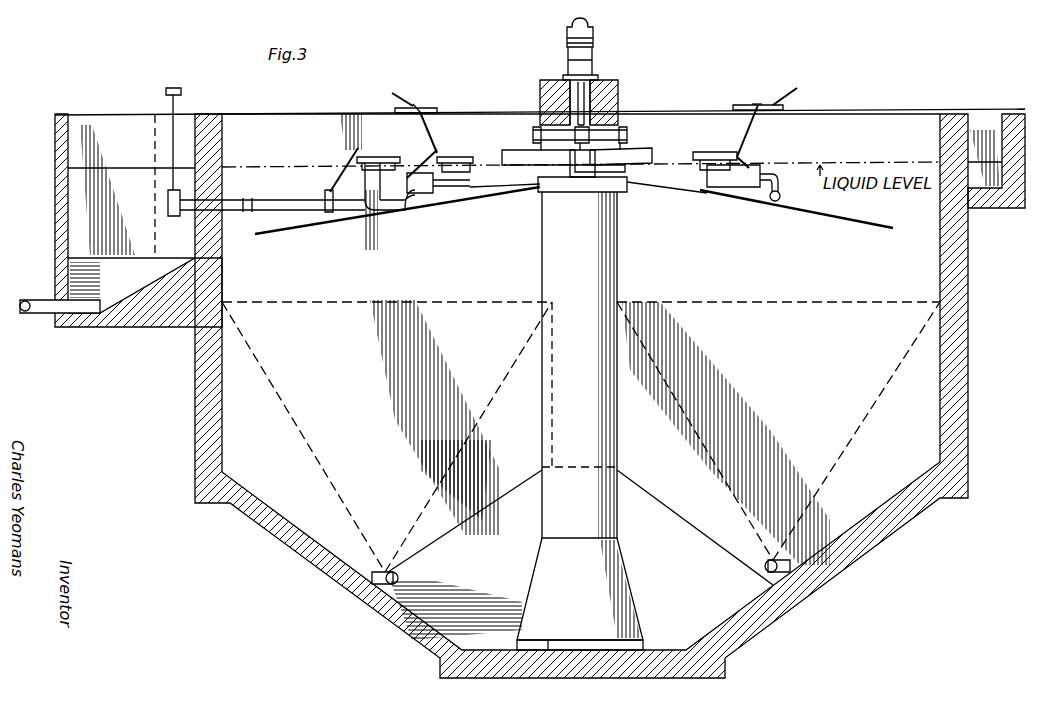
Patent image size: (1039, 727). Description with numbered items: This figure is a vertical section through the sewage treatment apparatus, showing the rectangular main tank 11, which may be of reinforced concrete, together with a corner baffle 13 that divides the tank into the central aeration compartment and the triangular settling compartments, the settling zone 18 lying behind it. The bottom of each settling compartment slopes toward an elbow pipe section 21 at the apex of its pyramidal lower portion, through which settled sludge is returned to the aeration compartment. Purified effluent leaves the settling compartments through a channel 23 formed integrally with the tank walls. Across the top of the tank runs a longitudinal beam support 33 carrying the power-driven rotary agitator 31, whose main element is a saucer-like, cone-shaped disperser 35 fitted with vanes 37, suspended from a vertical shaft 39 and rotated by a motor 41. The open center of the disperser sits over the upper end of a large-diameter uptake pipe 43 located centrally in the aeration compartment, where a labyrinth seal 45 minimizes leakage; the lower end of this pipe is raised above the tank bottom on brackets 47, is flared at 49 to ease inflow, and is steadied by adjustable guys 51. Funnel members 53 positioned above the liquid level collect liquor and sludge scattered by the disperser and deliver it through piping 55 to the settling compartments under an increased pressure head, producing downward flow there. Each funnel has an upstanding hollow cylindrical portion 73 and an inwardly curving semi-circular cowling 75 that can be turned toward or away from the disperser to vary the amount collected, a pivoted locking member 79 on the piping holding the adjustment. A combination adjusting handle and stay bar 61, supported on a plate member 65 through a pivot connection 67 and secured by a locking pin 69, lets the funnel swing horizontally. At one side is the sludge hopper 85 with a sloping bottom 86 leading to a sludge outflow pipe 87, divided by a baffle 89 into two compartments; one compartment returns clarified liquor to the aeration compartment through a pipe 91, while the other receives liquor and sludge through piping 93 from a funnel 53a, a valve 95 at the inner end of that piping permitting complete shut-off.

The main tank 11 is at (200, 396).
The baffle 13 is at (280, 362).
The settling zone 18 is at (885, 370).
The elbow pipe section 21 is at (395, 570).
The channel 23 is at (985, 125).
The rotary agitator 31 is at (638, 147).
The longitudinal beam support 33 is at (618, 88).
The disperser 35 is at (632, 172).
The vanes 37 is at (650, 156).
The vertical shaft 39 is at (585, 103).
The motor 41 is at (595, 38).
The uptake pipe 43 is at (620, 262).
The labyrinth seal 45 is at (628, 186).
The brackets 47 is at (520, 644).
The flared end 49 is at (636, 602).
The adjustable guys 51 is at (295, 230).
The funnel members 53 is at (460, 171).
The funnel 53a is at (345, 194).
The piping 55 is at (429, 190).
The combination adjusting handle and stay bar 61 is at (399, 95).
The plate members 65 is at (440, 111).
The pivot connection 67 is at (421, 104).
The locking pin 69 is at (414, 105).
The hollow cylindrical portion 73 is at (386, 161).
The cowling 75 is at (376, 157).
The pivoted locking member 79 is at (335, 178).
The sludge hopper 85 is at (90, 117).
The sloping bottom 86 is at (112, 290).
The sludge outflow pipe 87 is at (34, 300).
The baffle 89 is at (115, 142).
The pipe 91 is at (250, 204).
The piping 93 is at (285, 205).
The valve 95 is at (167, 206).